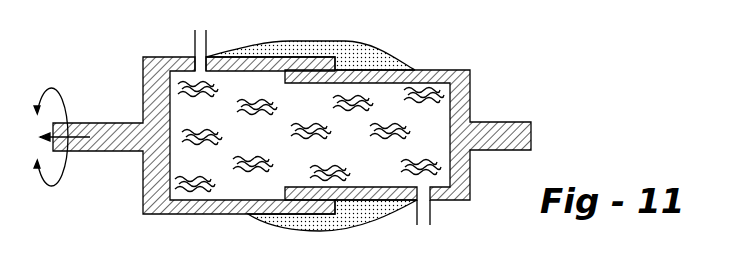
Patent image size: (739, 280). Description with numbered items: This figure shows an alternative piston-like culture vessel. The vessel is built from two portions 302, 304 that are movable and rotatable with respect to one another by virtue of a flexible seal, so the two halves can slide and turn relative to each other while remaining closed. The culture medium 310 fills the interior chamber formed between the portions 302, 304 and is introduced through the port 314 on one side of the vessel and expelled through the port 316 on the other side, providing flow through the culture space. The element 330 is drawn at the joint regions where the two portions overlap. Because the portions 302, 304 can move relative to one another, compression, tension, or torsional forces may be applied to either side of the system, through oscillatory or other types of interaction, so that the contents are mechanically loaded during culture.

The portion 302 is at (157, 83).
The portion 304 is at (462, 72).
The culture medium 310 is at (183, 176).
The port 314 is at (196, 45).
The port 316 is at (428, 215).
The solder 330 is at (360, 63).